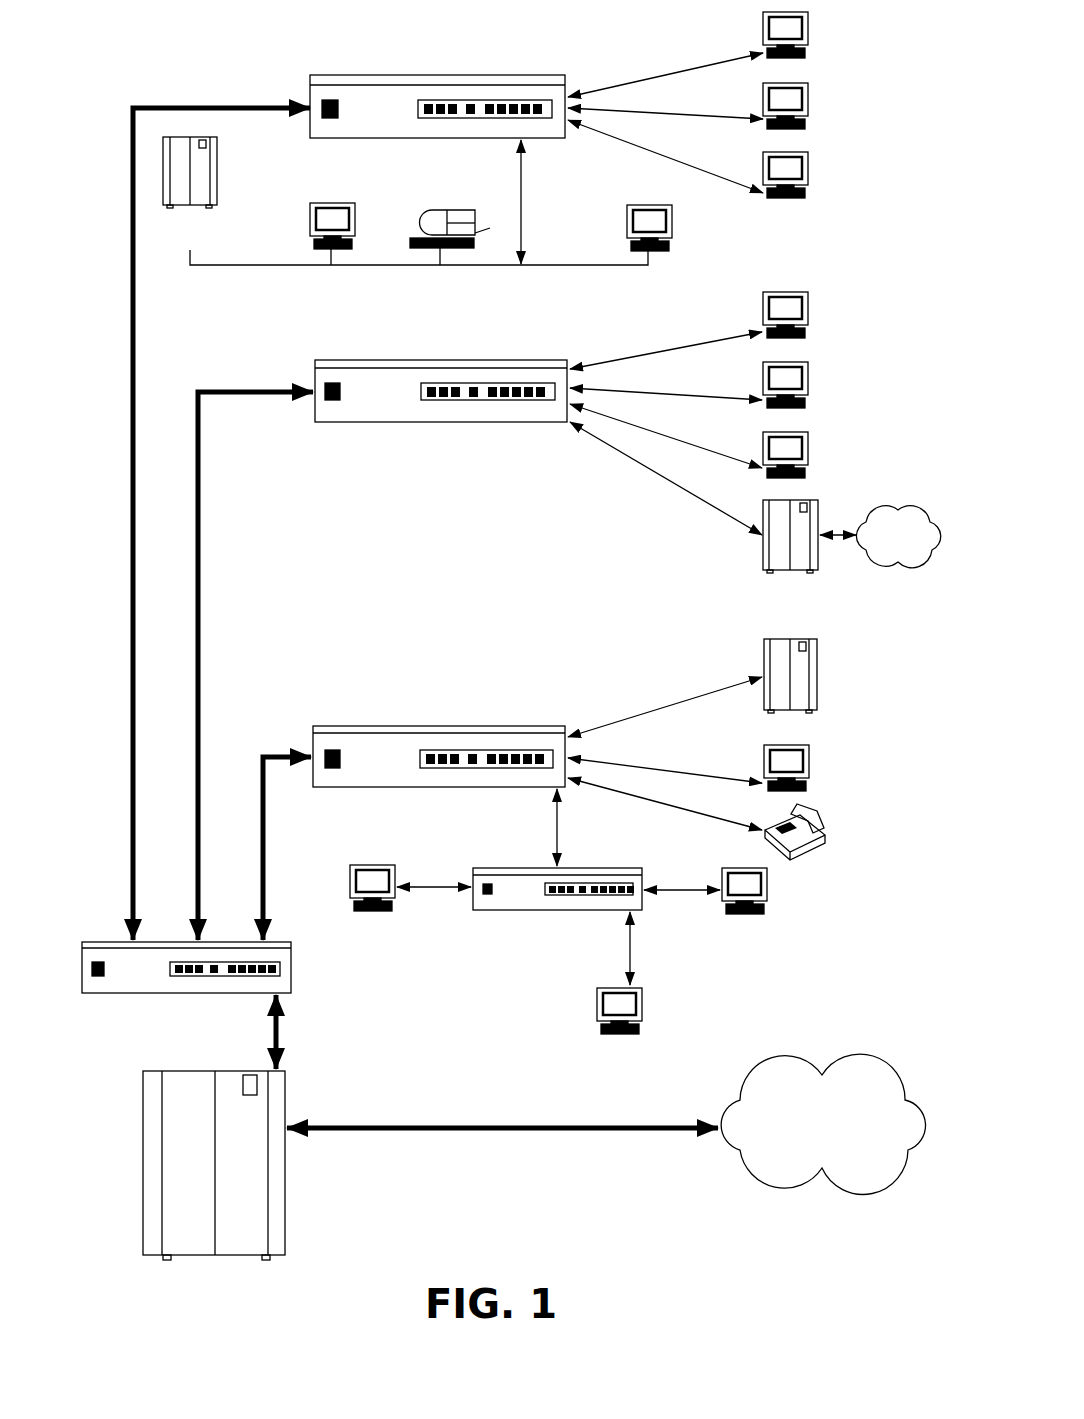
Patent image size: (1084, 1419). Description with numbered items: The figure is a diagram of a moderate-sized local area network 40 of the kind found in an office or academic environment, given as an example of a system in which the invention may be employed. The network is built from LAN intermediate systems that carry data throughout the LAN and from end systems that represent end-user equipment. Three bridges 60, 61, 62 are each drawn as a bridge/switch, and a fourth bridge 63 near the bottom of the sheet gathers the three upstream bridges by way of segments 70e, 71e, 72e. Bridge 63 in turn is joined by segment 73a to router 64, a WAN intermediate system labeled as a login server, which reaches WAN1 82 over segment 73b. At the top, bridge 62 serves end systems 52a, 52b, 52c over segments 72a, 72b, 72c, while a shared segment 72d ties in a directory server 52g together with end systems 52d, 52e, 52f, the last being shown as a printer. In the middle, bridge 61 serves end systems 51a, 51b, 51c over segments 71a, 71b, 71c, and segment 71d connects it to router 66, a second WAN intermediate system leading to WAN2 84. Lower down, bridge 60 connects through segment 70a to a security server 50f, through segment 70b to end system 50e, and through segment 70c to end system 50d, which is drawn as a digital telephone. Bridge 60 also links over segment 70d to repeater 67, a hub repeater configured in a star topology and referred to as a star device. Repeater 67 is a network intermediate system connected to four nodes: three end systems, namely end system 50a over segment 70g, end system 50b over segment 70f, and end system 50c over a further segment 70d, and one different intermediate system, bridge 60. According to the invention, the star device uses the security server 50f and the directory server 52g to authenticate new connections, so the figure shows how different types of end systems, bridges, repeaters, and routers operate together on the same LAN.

The local area network 40 is at (110, 500).
The end system 50a is at (362, 865).
The end system 50b is at (642, 996).
The end system 50c is at (768, 880).
The end system 50d is at (815, 818).
The end system 50e is at (812, 754).
The security server 50f is at (820, 650).
The end system 51a is at (812, 303).
The end system 51b is at (812, 372).
The end system 51c is at (812, 440).
The end system 52a is at (812, 26).
The end system 52b is at (812, 96).
The end system 52c is at (812, 165).
The end system 52d is at (674, 214).
The end system 52e is at (440, 210).
The end system 52f is at (334, 203).
The directory server 52g is at (218, 166).
The bridge 60 is at (500, 726).
The bridge 61 is at (480, 360).
The bridge 62 is at (480, 75).
The bridge 63 is at (103, 942).
The router 64 is at (143, 1113).
The router 66 is at (822, 516).
The repeater 67 is at (608, 868).
The segment 70a is at (679, 703).
The segment 70b is at (706, 773).
The segment 70c is at (723, 816).
The segment 70d is at (559, 830).
The segment 70e is at (278, 754).
The segment 70f is at (632, 950).
The segment 70g is at (428, 892).
The segment 71a is at (656, 352).
The segment 71b is at (676, 394).
The segment 71c is at (694, 445).
The segment 71d is at (701, 496).
The segment 71e is at (231, 389).
The segment 72a is at (648, 78).
The segment 72b is at (668, 114).
The segment 72c is at (684, 164).
The segment 72d is at (523, 190).
The segment 72e is at (232, 107).
The segment 73a is at (279, 1038).
The segment 73b is at (512, 1115).
The WAN1 82 is at (788, 1066).
The WAN2 84 is at (893, 512).